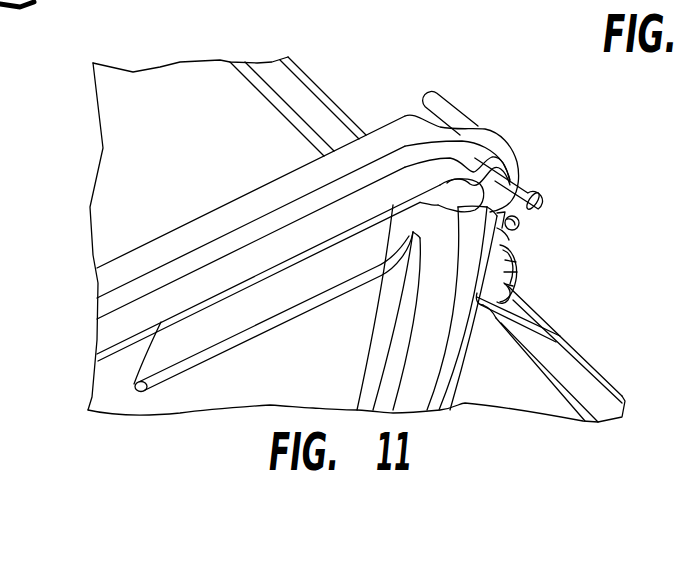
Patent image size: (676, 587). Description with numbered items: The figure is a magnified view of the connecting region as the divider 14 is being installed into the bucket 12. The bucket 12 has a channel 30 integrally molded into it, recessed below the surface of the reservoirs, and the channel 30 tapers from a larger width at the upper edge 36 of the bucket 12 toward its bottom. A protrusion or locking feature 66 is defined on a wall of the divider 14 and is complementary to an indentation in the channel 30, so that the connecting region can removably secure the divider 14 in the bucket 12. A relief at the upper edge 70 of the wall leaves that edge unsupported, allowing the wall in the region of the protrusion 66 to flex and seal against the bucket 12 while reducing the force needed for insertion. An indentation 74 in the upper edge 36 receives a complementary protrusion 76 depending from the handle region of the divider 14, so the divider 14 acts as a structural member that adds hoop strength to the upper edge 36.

The bucket 12 is at (308, 77).
The divider 14 is at (263, 167).
The channel 30 is at (517, 260).
The upper edge 36 is at (557, 363).
The protrusion or locking feature 66 is at (537, 109).
The upper edge of the wall 70 is at (497, 228).
The indentation 74 is at (510, 296).
The protrusion 76 is at (437, 100).